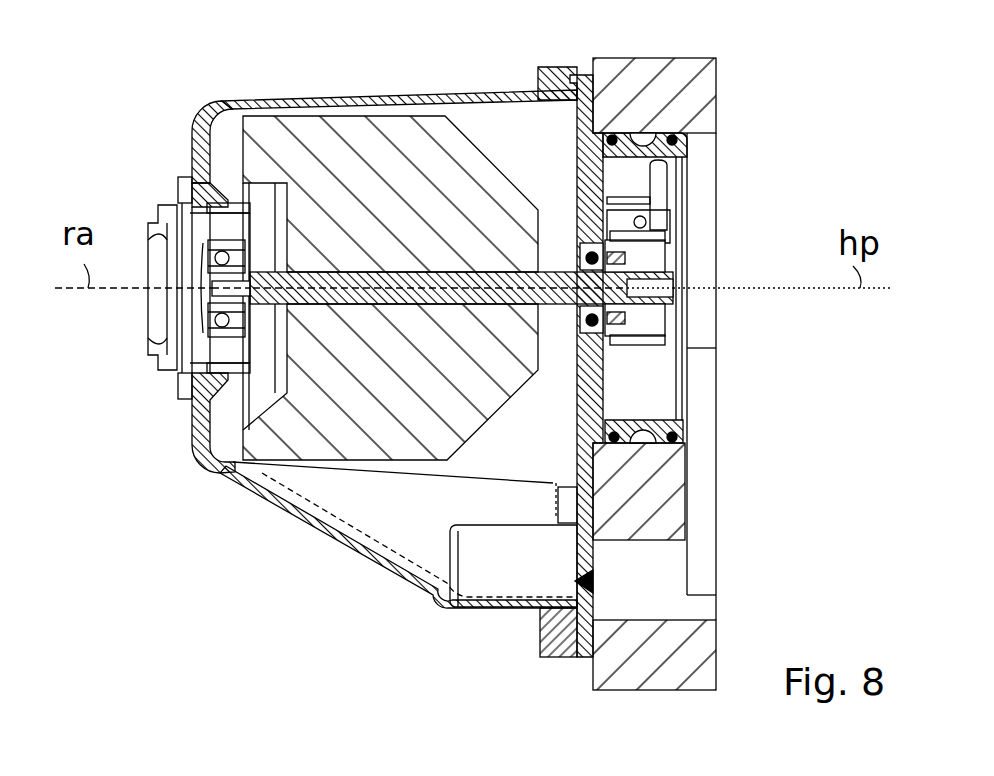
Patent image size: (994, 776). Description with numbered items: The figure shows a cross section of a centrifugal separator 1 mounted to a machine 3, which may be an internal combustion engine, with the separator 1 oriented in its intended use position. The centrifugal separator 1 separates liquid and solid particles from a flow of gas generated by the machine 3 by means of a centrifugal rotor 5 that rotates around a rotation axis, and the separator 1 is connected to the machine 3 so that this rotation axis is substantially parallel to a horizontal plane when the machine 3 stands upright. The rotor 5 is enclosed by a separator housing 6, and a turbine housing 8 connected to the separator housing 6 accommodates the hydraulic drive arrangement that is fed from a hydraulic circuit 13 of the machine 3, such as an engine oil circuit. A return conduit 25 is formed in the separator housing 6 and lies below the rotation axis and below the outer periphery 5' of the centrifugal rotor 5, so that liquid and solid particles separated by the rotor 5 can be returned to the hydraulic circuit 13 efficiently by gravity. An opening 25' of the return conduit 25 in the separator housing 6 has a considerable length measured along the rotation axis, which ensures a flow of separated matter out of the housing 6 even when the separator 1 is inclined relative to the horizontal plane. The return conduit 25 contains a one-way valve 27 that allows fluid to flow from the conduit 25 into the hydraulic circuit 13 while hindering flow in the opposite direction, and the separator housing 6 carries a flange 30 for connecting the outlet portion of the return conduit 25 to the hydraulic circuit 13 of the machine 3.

The centrifugal separator 1 is at (193, 72).
The machine 3 is at (717, 71).
The centrifugal rotor 5 is at (390, 248).
The outer periphery 5' is at (393, 382).
The separator housing 6 is at (434, 92).
The turbine housing 8 is at (579, 142).
The hydraulic circuit 13 is at (698, 613).
The return conduit 25 is at (398, 547).
The opening 25' is at (419, 516).
The one-way valve 27 is at (576, 582).
The flange 30 is at (542, 640).